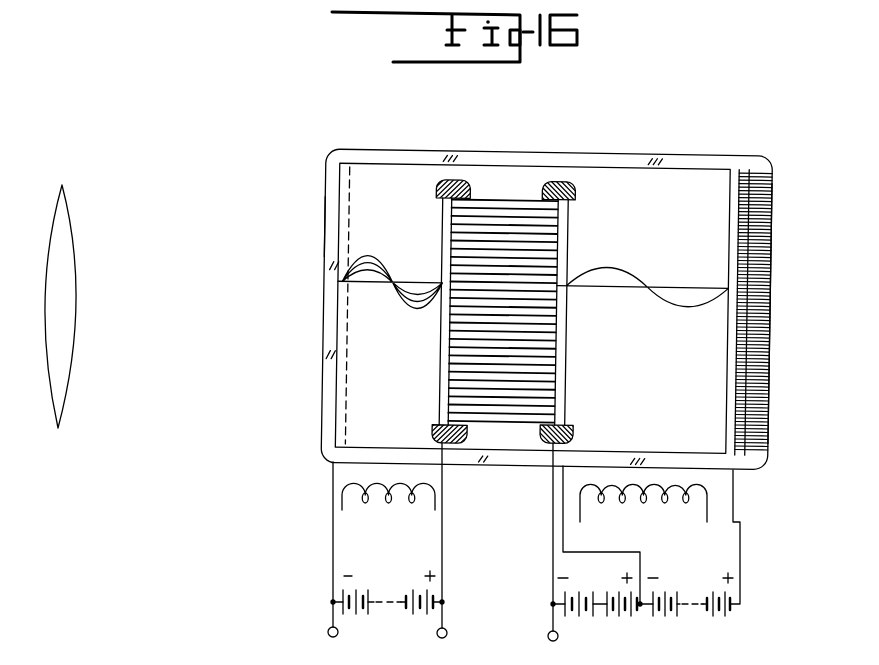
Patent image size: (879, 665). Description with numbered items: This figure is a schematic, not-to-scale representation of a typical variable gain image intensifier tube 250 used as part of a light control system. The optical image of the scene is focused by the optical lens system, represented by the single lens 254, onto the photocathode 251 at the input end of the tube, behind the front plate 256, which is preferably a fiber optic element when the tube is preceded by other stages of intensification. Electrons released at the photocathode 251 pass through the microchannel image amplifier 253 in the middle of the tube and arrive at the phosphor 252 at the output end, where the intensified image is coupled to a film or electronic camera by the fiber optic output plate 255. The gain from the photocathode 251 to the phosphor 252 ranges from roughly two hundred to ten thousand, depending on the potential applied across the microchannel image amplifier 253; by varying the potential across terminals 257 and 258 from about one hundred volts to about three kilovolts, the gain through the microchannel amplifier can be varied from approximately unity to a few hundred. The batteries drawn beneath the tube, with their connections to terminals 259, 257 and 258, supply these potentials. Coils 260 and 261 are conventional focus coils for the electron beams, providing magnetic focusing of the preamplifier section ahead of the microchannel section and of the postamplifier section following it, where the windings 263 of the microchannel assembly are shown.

The variable gain image intensifier tube 250 is at (588, 152).
The photocathode 251 is at (345, 183).
The phosphor 252 is at (742, 168).
The microchannel image amplifier 253 is at (495, 198).
The single lens 254 is at (68, 212).
The fiber optic output plate 255 is at (774, 184).
The front plate 256 is at (322, 228).
The terminal 257 is at (442, 638).
The terminal 258 is at (553, 641).
The terminal 259 is at (333, 637).
The focus coil 260 is at (380, 509).
The focus coil 261 is at (630, 508).
The coil windings 263 is at (440, 373).